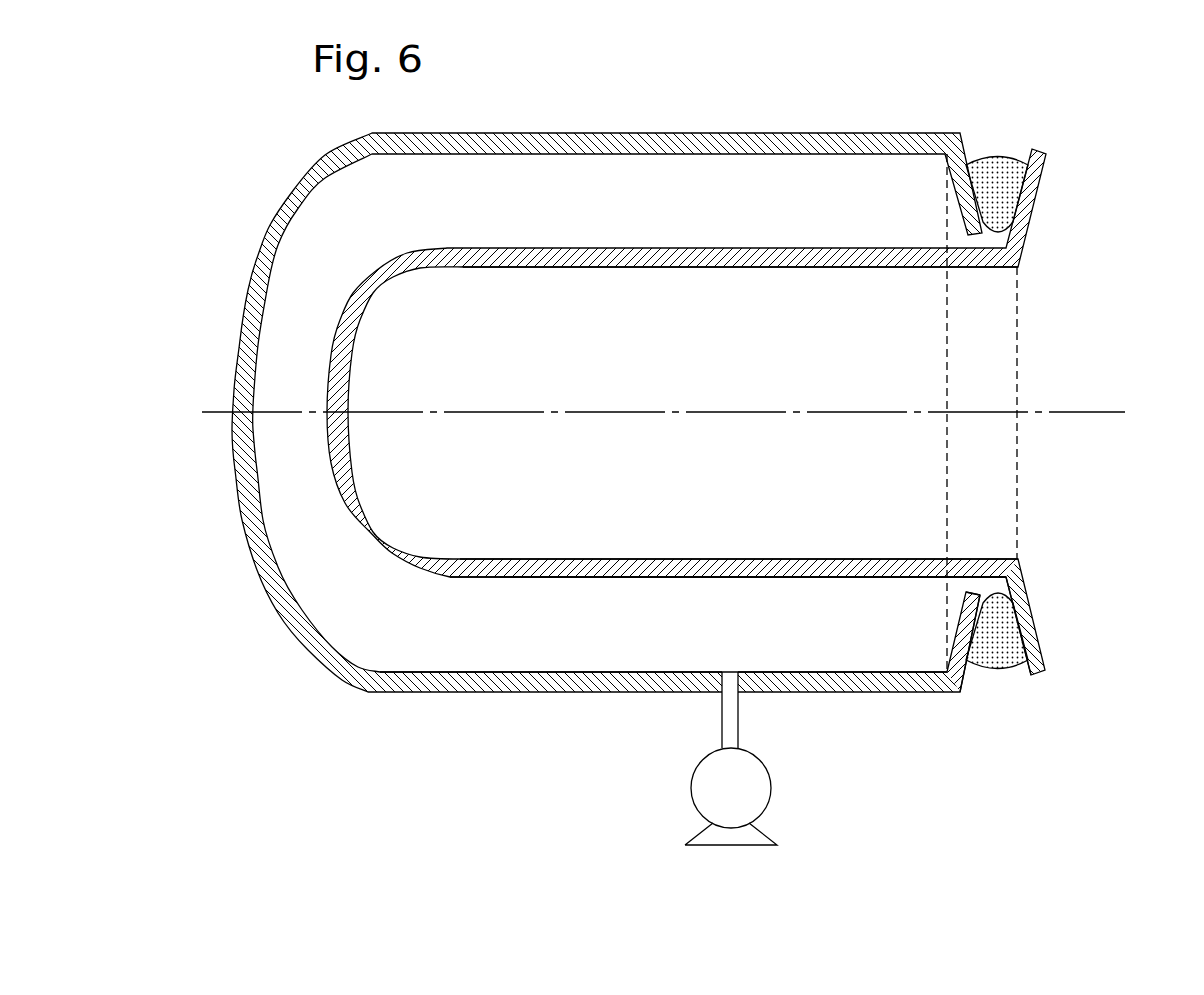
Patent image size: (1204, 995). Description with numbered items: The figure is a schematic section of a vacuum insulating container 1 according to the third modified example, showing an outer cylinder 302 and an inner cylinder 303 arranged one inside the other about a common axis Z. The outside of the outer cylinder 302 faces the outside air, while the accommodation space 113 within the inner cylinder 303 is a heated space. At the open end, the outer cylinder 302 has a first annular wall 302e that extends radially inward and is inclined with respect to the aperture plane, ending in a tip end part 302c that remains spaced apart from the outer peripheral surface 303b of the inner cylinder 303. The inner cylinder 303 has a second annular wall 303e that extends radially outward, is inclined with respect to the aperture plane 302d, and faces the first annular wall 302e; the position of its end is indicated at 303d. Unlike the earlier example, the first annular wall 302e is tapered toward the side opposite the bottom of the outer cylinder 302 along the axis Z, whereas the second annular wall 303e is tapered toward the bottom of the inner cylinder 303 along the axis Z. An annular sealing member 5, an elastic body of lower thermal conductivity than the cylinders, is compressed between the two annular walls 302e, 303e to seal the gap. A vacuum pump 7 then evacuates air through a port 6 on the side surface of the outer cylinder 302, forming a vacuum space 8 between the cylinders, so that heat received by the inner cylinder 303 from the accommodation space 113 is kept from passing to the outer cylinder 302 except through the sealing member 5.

The vacuum insulating container 1 is at (672, 77).
The outer cylinder 302 is at (585, 693).
The inner cylinder 303 is at (668, 560).
The sealing member 5 is at (1000, 637).
The port 6 is at (732, 727).
The vacuum pump 7 is at (698, 812).
The vacuum space 8 is at (757, 605).
The accommodation space 113 is at (895, 342).
The axis Z is at (1114, 410).
The aperture plane 302d is at (947, 463).
The end position of inner tube flange 303d is at (1018, 518).
The tip end part 302c is at (977, 590).
The first annular wall 302e is at (963, 623).
The second annular wall 303e is at (1040, 627).
The outer peripheral surface 303b is at (613, 578).